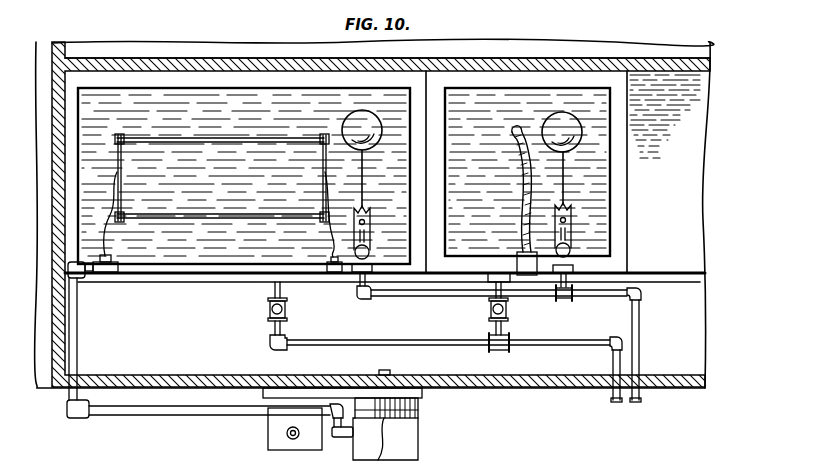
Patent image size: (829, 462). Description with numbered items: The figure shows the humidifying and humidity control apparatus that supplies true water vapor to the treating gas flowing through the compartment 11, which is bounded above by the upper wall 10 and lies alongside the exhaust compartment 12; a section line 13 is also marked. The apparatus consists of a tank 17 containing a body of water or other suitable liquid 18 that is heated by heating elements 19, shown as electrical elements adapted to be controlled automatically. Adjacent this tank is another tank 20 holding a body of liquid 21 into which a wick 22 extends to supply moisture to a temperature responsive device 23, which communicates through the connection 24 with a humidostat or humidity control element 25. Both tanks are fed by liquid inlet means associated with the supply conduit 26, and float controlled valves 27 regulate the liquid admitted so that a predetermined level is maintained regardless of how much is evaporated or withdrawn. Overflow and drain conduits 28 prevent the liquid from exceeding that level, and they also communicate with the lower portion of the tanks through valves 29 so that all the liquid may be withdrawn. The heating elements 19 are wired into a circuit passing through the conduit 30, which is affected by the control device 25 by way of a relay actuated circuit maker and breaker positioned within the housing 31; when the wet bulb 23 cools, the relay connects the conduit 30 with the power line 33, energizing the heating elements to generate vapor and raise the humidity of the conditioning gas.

The upper wall 10 is at (694, 243).
The compartment 11 is at (110, 360).
The exhaust compartment 12 is at (100, 97).
The section line 13 is at (538, 52).
The tank 17 is at (182, 76).
The body of water or other suitable liquid 18 is at (249, 100).
The heating elements 19 is at (281, 130).
The tank 20 is at (626, 220).
The body of liquid 21 is at (471, 100).
The wick 22 is at (524, 130).
The temperature responsive device 23 is at (540, 298).
The connection 24 is at (384, 370).
The humidostat or humidity control element 25 is at (419, 408).
The supply conduit 26 is at (641, 325).
The float controlled valves 27 is at (358, 277).
The overflow and drain conduits 28 is at (327, 341).
The valves 29 is at (268, 312).
The conduit 30 is at (147, 272).
The housing 31 is at (413, 445).
The power line 33 is at (287, 433).